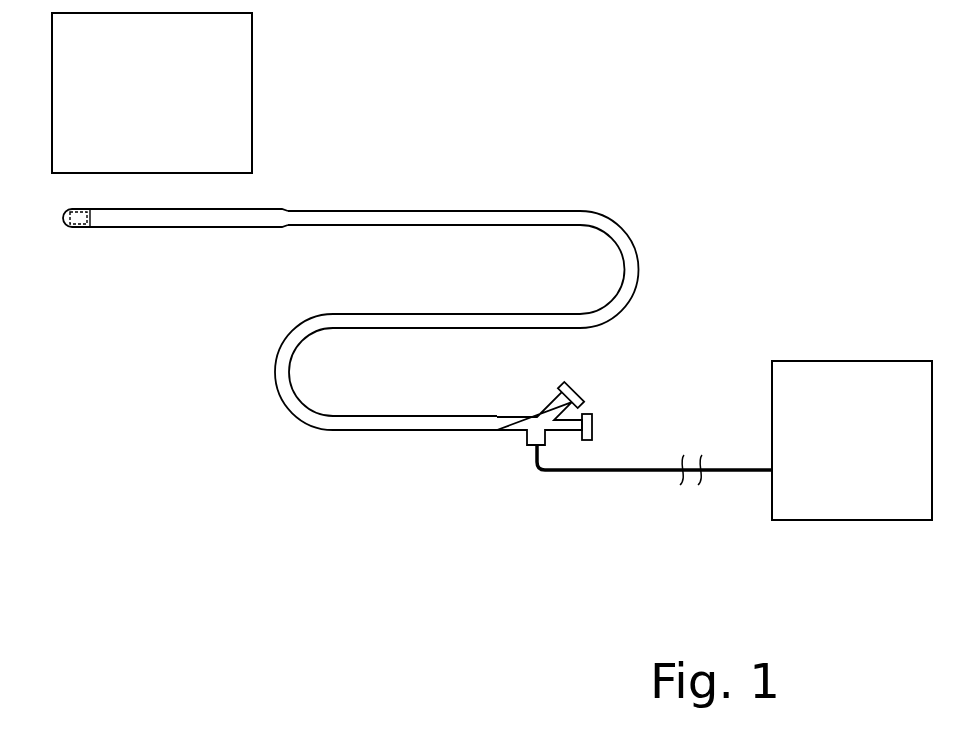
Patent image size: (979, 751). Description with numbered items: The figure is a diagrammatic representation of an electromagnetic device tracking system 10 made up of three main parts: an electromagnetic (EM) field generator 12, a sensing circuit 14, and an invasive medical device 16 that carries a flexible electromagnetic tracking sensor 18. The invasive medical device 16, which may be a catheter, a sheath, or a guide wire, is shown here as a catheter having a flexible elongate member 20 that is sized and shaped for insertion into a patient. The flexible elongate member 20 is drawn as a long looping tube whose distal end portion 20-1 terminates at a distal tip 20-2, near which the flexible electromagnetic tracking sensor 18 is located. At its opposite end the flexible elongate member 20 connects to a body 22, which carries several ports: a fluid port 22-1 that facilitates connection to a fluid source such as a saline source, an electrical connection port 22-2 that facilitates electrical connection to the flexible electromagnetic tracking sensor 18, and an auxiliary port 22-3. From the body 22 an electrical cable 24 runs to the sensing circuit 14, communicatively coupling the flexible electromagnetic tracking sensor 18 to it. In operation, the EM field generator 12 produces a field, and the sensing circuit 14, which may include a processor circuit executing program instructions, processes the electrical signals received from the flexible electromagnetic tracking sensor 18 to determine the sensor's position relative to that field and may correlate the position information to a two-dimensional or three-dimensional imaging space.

The electromagnetic device tracking system 10 is at (172, 480).
The electromagnetic (EM) field generator 12 is at (166, 140).
The sensing circuit 14 is at (868, 488).
The invasive medical device 16 is at (542, 122).
The flexible electromagnetic tracking sensor 18 is at (97, 217).
The flexible elongate member 20 is at (376, 210).
The distal end portion 20-1 is at (78, 240).
The distal tip 20-2 is at (63, 218).
The body 22 is at (622, 405).
The fluid port 22-1 is at (558, 398).
The electrical connection port 22-2 is at (527, 442).
The auxiliary port 22-3 is at (596, 431).
The electrical cable 24 is at (612, 472).